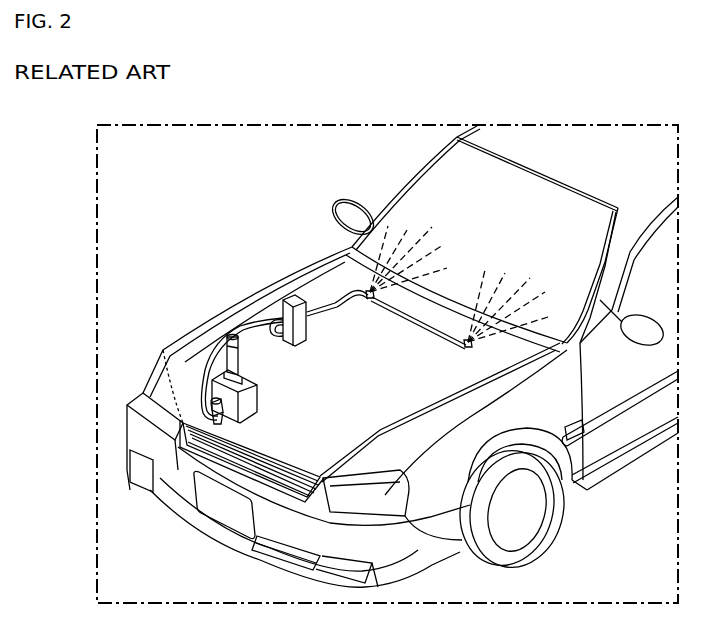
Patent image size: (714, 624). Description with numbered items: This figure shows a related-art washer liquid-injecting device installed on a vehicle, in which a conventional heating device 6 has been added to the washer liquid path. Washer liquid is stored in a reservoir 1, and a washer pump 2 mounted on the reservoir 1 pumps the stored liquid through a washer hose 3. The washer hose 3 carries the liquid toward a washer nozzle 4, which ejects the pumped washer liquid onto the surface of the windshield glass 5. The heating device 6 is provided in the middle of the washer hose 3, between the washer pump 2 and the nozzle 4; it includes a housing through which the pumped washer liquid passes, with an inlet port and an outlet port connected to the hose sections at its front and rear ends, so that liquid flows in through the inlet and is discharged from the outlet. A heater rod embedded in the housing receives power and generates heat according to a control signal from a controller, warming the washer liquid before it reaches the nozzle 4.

The reservoir 1 is at (258, 398).
The washer pump 2 is at (213, 418).
The washer hose 3 is at (243, 325).
The washer nozzle 4 is at (368, 291).
The windshield glass 5 is at (412, 190).
The heating device 6 is at (293, 297).